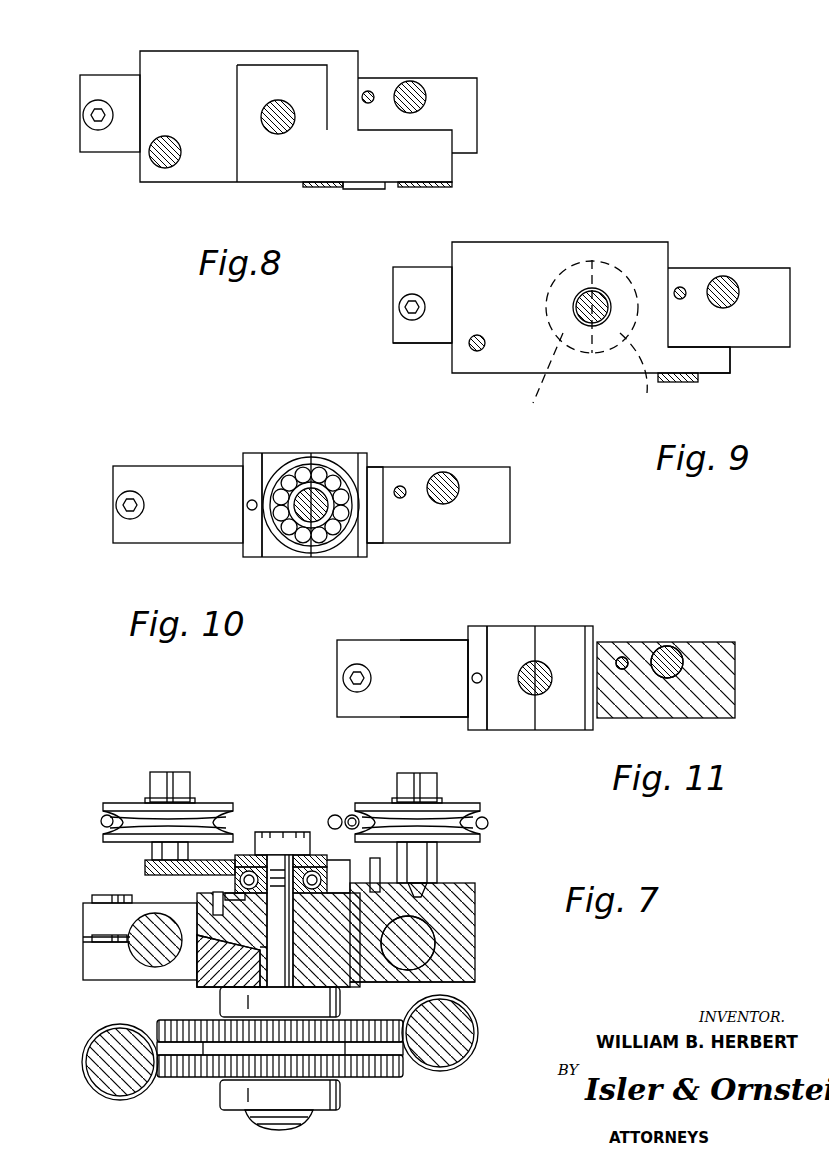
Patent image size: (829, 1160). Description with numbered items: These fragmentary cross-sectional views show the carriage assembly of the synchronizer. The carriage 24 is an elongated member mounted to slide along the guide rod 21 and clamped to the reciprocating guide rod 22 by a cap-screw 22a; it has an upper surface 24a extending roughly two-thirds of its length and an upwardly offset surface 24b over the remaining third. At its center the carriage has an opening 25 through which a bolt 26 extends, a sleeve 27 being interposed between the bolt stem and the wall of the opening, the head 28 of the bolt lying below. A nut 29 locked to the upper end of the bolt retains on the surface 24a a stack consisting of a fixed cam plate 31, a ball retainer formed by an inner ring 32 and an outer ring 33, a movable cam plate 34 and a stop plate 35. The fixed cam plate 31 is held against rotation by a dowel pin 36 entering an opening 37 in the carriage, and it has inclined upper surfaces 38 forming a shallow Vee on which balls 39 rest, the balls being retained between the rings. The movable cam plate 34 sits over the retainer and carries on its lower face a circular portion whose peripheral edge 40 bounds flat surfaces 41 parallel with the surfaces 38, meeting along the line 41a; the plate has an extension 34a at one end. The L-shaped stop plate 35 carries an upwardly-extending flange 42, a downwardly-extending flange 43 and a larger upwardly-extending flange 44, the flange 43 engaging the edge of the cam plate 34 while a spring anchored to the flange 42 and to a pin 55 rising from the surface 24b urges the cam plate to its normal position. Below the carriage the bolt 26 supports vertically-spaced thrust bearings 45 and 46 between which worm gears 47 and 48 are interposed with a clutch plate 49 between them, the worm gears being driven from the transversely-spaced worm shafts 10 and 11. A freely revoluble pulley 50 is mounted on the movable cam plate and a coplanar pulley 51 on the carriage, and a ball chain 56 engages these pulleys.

In FIG. 7, the worm shaft 10 is at (467, 1027).
In FIG. 7, the worm shaft 11 is at (140, 1087).
In FIG. 7, the guide rod 21 is at (425, 950).
In FIG. 7, the guide rod 22 is at (140, 958).
In FIG. 8, the cap-screw 22a is at (87, 120).
In FIG. 9, the cap-screw 22a is at (400, 312).
In FIG. 10, the cap-screw 22a is at (118, 508).
In FIG. 11, the cap-screw 22a is at (347, 682).
In FIG. 7, the cap-screw 22a is at (105, 895).
In FIG. 9, the carriage 24 is at (422, 345).
In FIG. 10, the carriage 24 is at (420, 545).
In FIG. 11, the carriage 24 is at (373, 718).
In FIG. 7, the carriage 24 is at (477, 893).
In FIG. 8, the upper surface 24a is at (113, 143).
In FIG. 9, the upper surface 24a is at (413, 273).
In FIG. 10, the upper surface 24a is at (182, 533).
In FIG. 11, the upper surface 24a is at (417, 707).
In FIG. 7, the upper surface 24a is at (175, 903).
In FIG. 8, the upwardly offset surface 24b is at (455, 92).
In FIG. 9, the upwardly offset surface 24b is at (757, 282).
In FIG. 10, the upwardly offset surface 24b is at (497, 510).
In FIG. 11, the upwardly offset surface 24b is at (666, 680).
In FIG. 7, the upwardly offset surface 24b is at (460, 883).
In FIG. 7, the opening 25 is at (260, 947).
In FIG. 8, the bolt 26 is at (283, 108).
In FIG. 9, the bolt 26 is at (600, 300).
In FIG. 10, the bolt 26 is at (313, 493).
In FIG. 11, the bolt 26 is at (548, 670).
In FIG. 7, the bolt 26 is at (350, 975).
In FIG. 7, the sleeve 27 is at (203, 962).
In FIG. 7, the head 28 is at (287, 1128).
In FIG. 7, the nut 29 is at (273, 833).
In FIG. 10, the fixed cam plate 31 is at (257, 558).
In FIG. 11, the fixed cam plate 31 is at (480, 732).
In FIG. 7, the fixed cam plate 31 is at (467, 905).
In FIG. 10, the inner ring 32 is at (330, 505).
In FIG. 7, the inner ring 32 is at (249, 870).
In FIG. 10, the outer ring 33 is at (280, 465).
In FIG. 7, the outer ring 33 is at (237, 873).
In FIG. 8, the movable cam plate 34 is at (185, 182).
In FIG. 9, the movable cam plate 34 is at (503, 253).
In FIG. 7, the movable cam plate 34 is at (150, 875).
In FIG. 9, the extension 34a is at (713, 365).
In FIG. 8, the stop plate 35 is at (248, 172).
In FIG. 7, the stop plate 35 is at (322, 863).
In FIG. 10, the dowel pin 36 is at (250, 500).
In FIG. 11, the dowel pin 36 is at (477, 673).
In FIG. 7, the dowel pin 36 is at (225, 897).
In FIG. 7, the opening 37 is at (213, 910).
In FIG. 10, the inclined upper surfaces 38 is at (270, 463).
In FIG. 11, the inclined upper surfaces 38 is at (552, 637).
In FIG. 7, the inclined upper surfaces 38 is at (280, 921).
In FIG. 10, the balls 39 is at (325, 470).
In FIG. 7, the balls 39 is at (337, 814).
In FIG. 9, the peripheral edge 40 is at (575, 262).
In FIG. 9, the flat surfaces 41 is at (578, 377).
In FIG. 7, the flat surfaces 41 is at (238, 850).
In FIG. 9, the line 41a is at (593, 280).
In FIG. 8, the upwardly-extending flange 42 is at (320, 188).
In FIG. 8, the downwardly-extending flange 43 is at (363, 190).
In FIG. 9, the downwardly-extending flange 43 is at (693, 383).
In FIG. 8, the upwardly-extending flange 44 is at (422, 188).
In FIG. 7, the thrust bearing 45 is at (334, 1000).
In FIG. 7, the thrust bearing 46 is at (342, 1096).
In FIG. 7, the worm gear 47 is at (392, 1023).
In FIG. 7, the worm gear 48 is at (407, 1078).
In FIG. 7, the clutch plate 49 is at (203, 1050).
In FIG. 7, the pulley 50 is at (123, 803).
In FIG. 7, the pulley 51 is at (455, 805).
In FIG. 8, the pin 55 is at (373, 93).
In FIG. 9, the pin 55 is at (685, 290).
In FIG. 10, the pin 55 is at (403, 490).
In FIG. 11, the pin 55 is at (623, 663).
In FIG. 7, the pin 55 is at (370, 866).
In FIG. 7, the ball chain 56 is at (105, 815).